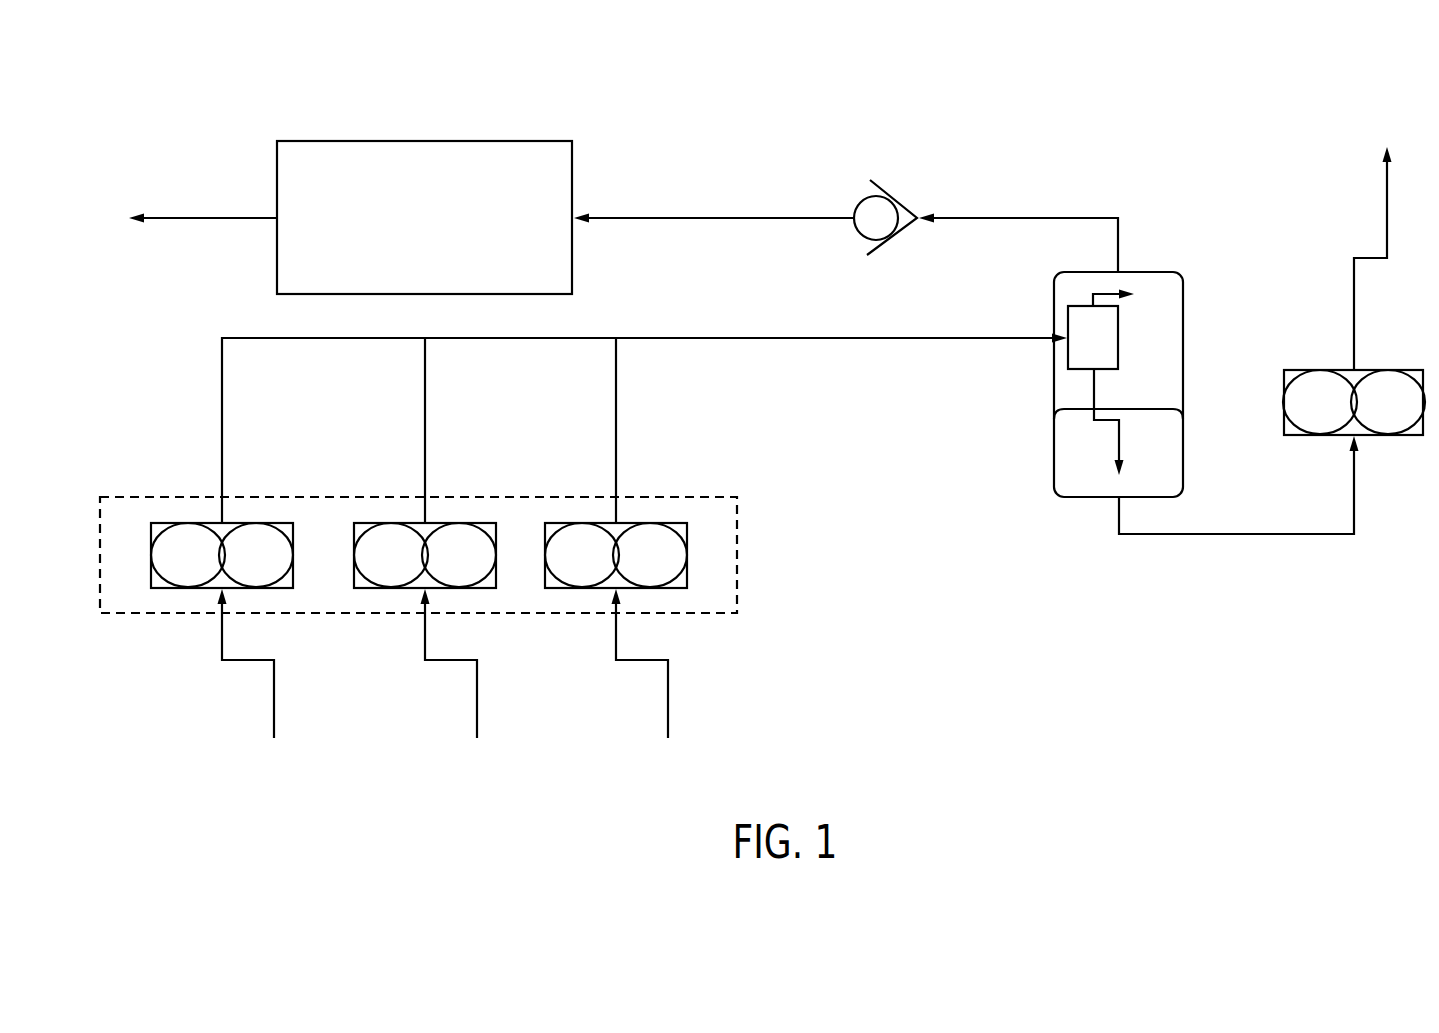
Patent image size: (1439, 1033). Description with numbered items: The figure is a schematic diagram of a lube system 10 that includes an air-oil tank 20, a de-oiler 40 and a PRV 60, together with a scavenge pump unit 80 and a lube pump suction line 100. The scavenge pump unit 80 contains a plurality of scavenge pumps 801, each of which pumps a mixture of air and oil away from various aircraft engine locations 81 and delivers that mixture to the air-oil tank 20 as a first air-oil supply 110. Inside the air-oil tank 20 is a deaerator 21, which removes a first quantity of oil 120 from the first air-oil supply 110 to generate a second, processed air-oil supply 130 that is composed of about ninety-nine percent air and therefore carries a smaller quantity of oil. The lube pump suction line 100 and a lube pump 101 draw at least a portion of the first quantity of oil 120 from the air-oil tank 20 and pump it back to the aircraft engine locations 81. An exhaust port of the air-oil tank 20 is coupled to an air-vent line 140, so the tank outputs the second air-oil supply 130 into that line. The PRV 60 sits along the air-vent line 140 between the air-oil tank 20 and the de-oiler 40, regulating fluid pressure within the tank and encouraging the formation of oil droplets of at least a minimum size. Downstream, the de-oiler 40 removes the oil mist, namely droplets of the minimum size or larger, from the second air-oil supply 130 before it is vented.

The lube system 10 is at (766, 100).
The de-oiler 40 is at (412, 230).
The PRV 60 is at (900, 186).
The air-vent line 140 is at (663, 210).
The second air-oil supply 130 is at (1010, 210).
The air-oil tank 20 is at (1045, 292).
The deaerator 21 is at (1056, 370).
The first quantity of oil 120 is at (1094, 485).
The lube pump suction line 100 is at (1244, 550).
The lube pump 101 is at (1277, 360).
The first air-oil supply 110 is at (710, 342).
The scavenge pump unit 80 is at (752, 577).
The scavenge pump 801 is at (265, 531).
The aircraft engine location 81 is at (448, 678).